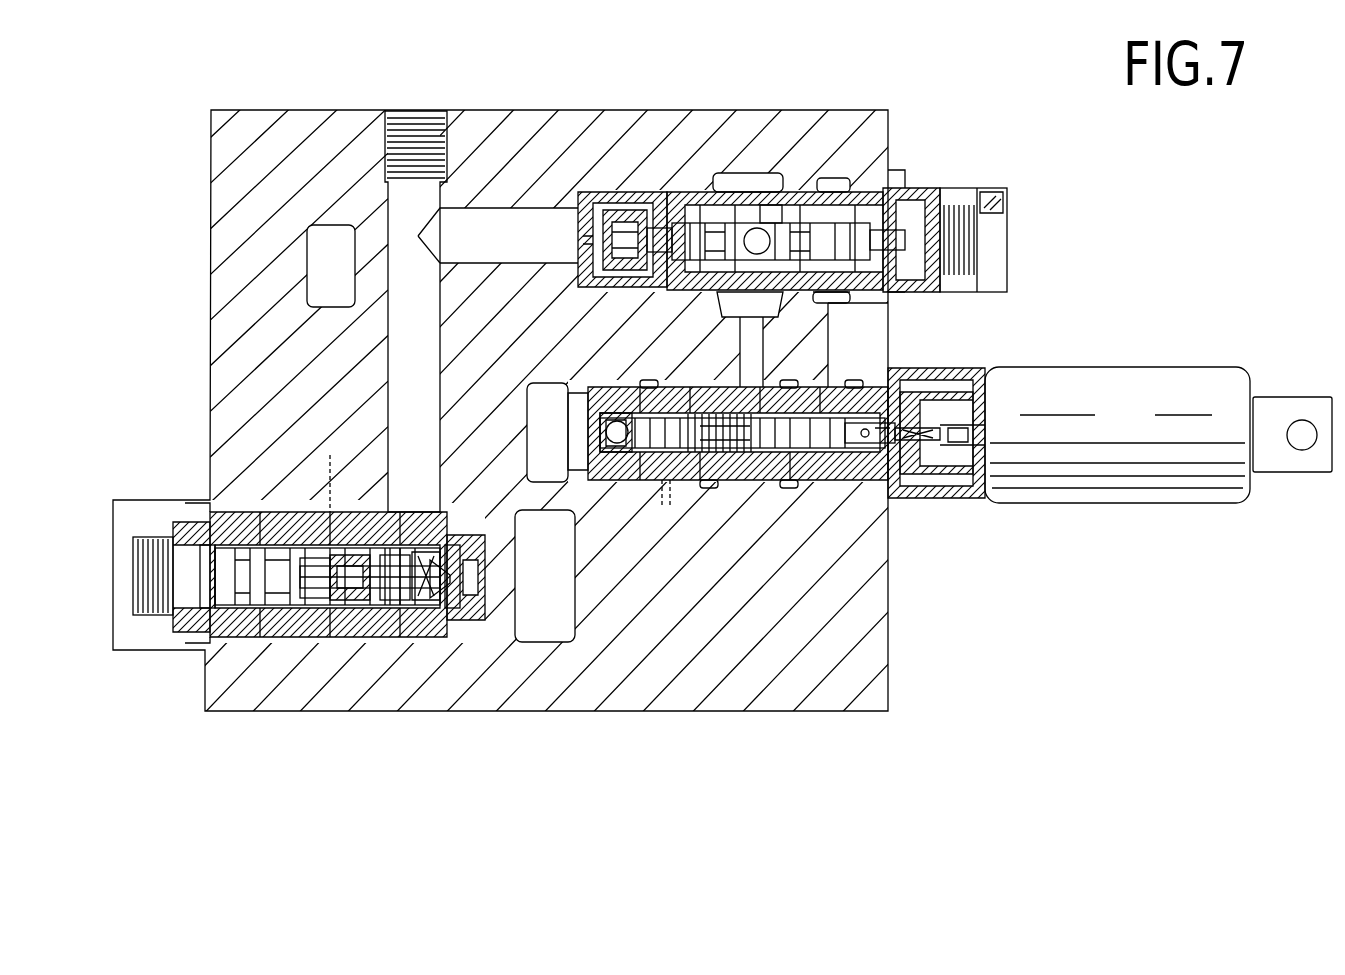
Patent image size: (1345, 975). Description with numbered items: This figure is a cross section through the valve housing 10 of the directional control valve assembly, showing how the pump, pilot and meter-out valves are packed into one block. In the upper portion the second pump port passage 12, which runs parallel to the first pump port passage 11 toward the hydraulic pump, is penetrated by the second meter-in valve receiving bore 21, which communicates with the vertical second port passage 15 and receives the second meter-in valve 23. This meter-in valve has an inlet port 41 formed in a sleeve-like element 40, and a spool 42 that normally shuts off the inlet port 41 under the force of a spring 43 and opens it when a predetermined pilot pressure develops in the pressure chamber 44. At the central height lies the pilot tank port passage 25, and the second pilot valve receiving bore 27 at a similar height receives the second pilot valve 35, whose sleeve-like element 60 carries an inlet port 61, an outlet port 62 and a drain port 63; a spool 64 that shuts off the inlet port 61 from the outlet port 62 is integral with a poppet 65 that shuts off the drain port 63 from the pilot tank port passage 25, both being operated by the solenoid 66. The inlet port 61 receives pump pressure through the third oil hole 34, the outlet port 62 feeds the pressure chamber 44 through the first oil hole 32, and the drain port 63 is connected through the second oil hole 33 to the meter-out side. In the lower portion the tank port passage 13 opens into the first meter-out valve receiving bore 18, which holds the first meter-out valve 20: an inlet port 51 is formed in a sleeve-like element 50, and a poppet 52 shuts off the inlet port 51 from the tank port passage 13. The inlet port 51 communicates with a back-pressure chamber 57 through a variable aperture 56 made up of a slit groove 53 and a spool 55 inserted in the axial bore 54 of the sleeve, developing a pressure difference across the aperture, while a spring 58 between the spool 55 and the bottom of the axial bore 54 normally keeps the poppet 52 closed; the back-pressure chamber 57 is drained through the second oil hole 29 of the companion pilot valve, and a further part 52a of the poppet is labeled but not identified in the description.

The valve housing 10 is at (522, 128).
The first pump port passage 11 is at (333, 226).
The second port passage 15 is at (402, 126).
The second pump port passage 12 is at (732, 174).
The second meter-in valve receiving bore 21 is at (802, 192).
The second meter-in valve 23 is at (874, 164).
The sleeve-like element 40 is at (712, 182).
The inlet port 41 is at (768, 205).
The spool 42 is at (750, 272).
The spring 43 is at (626, 218).
The pressure chamber 44 is at (916, 245).
The third oil hole 34 is at (744, 345).
The first oil hole 32 is at (832, 340).
The pilot tank port passage 25 is at (535, 384).
The sleeve-like element 60 is at (775, 481).
The second pilot valve receiving bore 27 is at (806, 488).
The inlet port 61 is at (738, 400).
The outlet port 62 is at (812, 400).
The drain port 63 is at (666, 410).
The spool 64 is at (728, 470).
The poppet 65 is at (612, 460).
The second oil hole 33 is at (672, 508).
The second pilot valve 35 is at (880, 500).
The solenoid 66 is at (1132, 378).
The tank port passage 13 is at (553, 642).
The first meter-out valve 20 is at (242, 659).
The back-pressure chamber 57 is at (278, 641).
The sleeve-like element 50 is at (322, 640).
The first meter-out valve receiving bore 18 is at (380, 641).
The inlet port 51 is at (410, 641).
The spring seat 52a is at (392, 641).
The spring 58 is at (432, 641).
The poppet 52 is at (470, 641).
The spool 55 is at (332, 555).
The second oil hole 29 is at (346, 472).
The axial bore 54 is at (372, 560).
The variable aperture 56 is at (404, 548).
The slit groove 53 is at (445, 545).